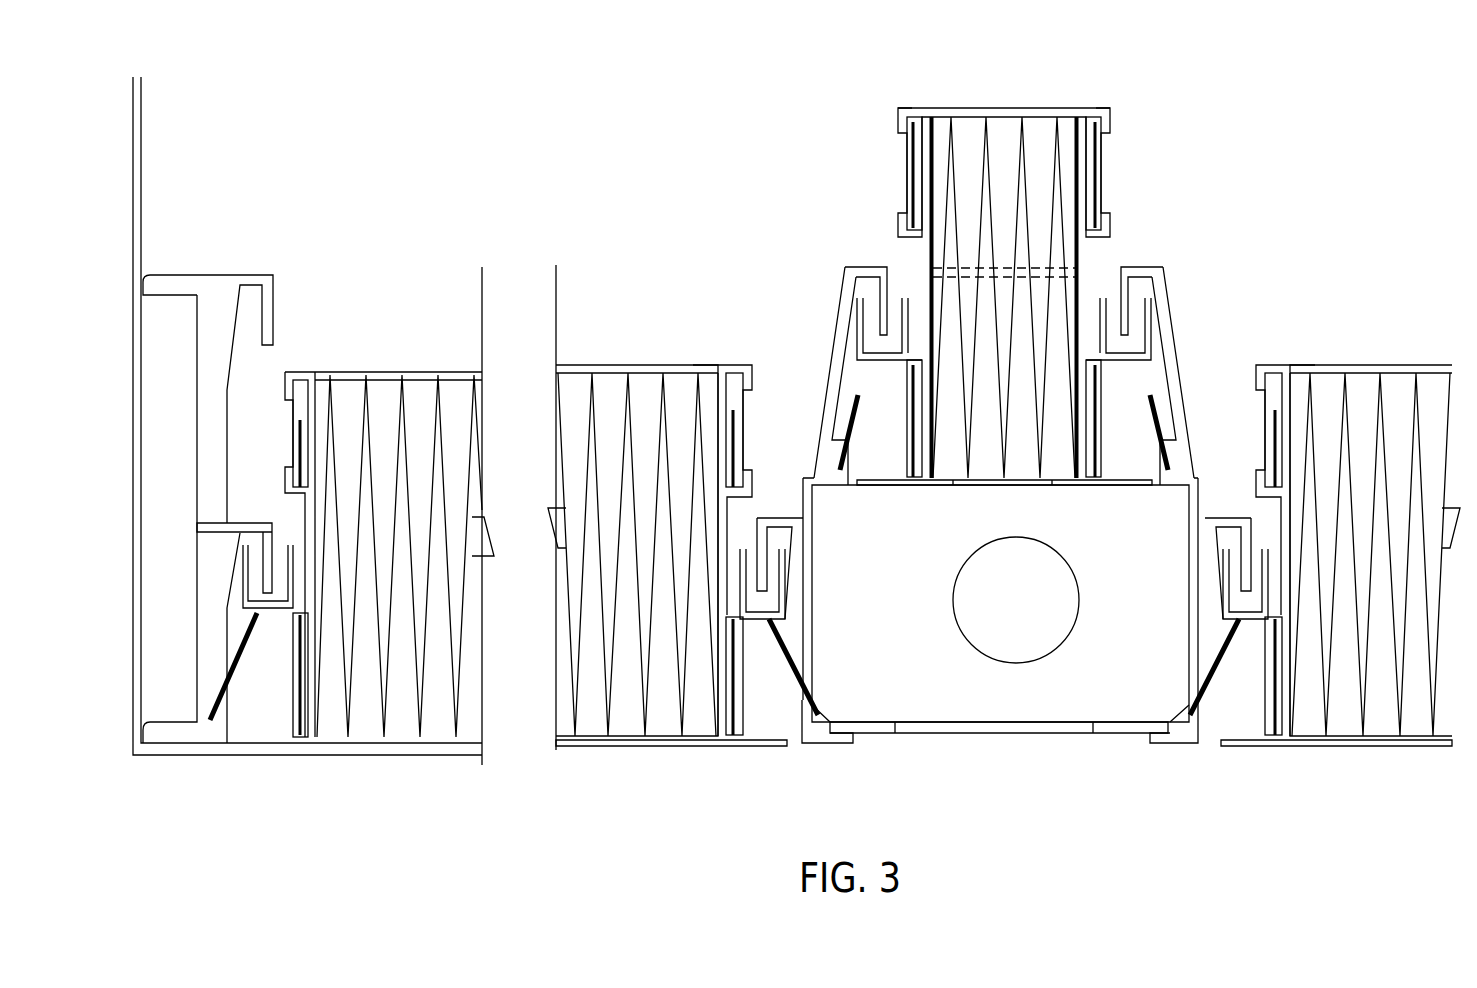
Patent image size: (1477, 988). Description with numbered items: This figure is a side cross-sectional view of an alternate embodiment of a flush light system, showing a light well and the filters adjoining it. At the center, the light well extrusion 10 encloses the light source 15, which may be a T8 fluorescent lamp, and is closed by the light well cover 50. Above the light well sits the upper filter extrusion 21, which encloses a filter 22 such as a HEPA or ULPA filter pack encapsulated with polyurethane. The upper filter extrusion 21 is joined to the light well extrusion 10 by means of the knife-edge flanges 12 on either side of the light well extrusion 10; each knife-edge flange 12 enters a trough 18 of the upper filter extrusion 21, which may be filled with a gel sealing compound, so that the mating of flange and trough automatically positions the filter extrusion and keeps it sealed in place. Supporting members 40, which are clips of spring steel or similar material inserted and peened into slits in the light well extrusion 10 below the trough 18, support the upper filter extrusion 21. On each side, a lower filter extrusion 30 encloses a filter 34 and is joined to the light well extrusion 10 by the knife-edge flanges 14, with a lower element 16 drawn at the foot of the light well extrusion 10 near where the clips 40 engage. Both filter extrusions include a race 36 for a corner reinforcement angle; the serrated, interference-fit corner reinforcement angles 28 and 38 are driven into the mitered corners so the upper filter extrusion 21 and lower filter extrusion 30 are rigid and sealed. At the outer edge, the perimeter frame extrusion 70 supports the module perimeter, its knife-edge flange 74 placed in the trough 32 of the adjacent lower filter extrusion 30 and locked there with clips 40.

The light well extrusion 10 is at (805, 478).
The knife-edge flange 12 is at (862, 268).
The knife-edge flange 14 is at (762, 518).
The light source 15 is at (1004, 614).
The lower bracket 16 is at (790, 730).
The trough 18 is at (900, 362).
The upper filter extrusion 21 is at (898, 108).
The filter 22 is at (1003, 152).
The corner reinforcement angle 28 is at (910, 180).
The lower filter extrusion 30 is at (318, 372).
The trough 32 is at (268, 612).
The filter 34 is at (385, 390).
The race 36 is at (934, 170).
The corner reinforcement angle 38 is at (738, 430).
The supporting member 40 is at (228, 675).
The light well cover 50 is at (893, 735).
The perimeter frame extrusion 70 is at (225, 275).
The knife-edge flange 74 is at (262, 523).